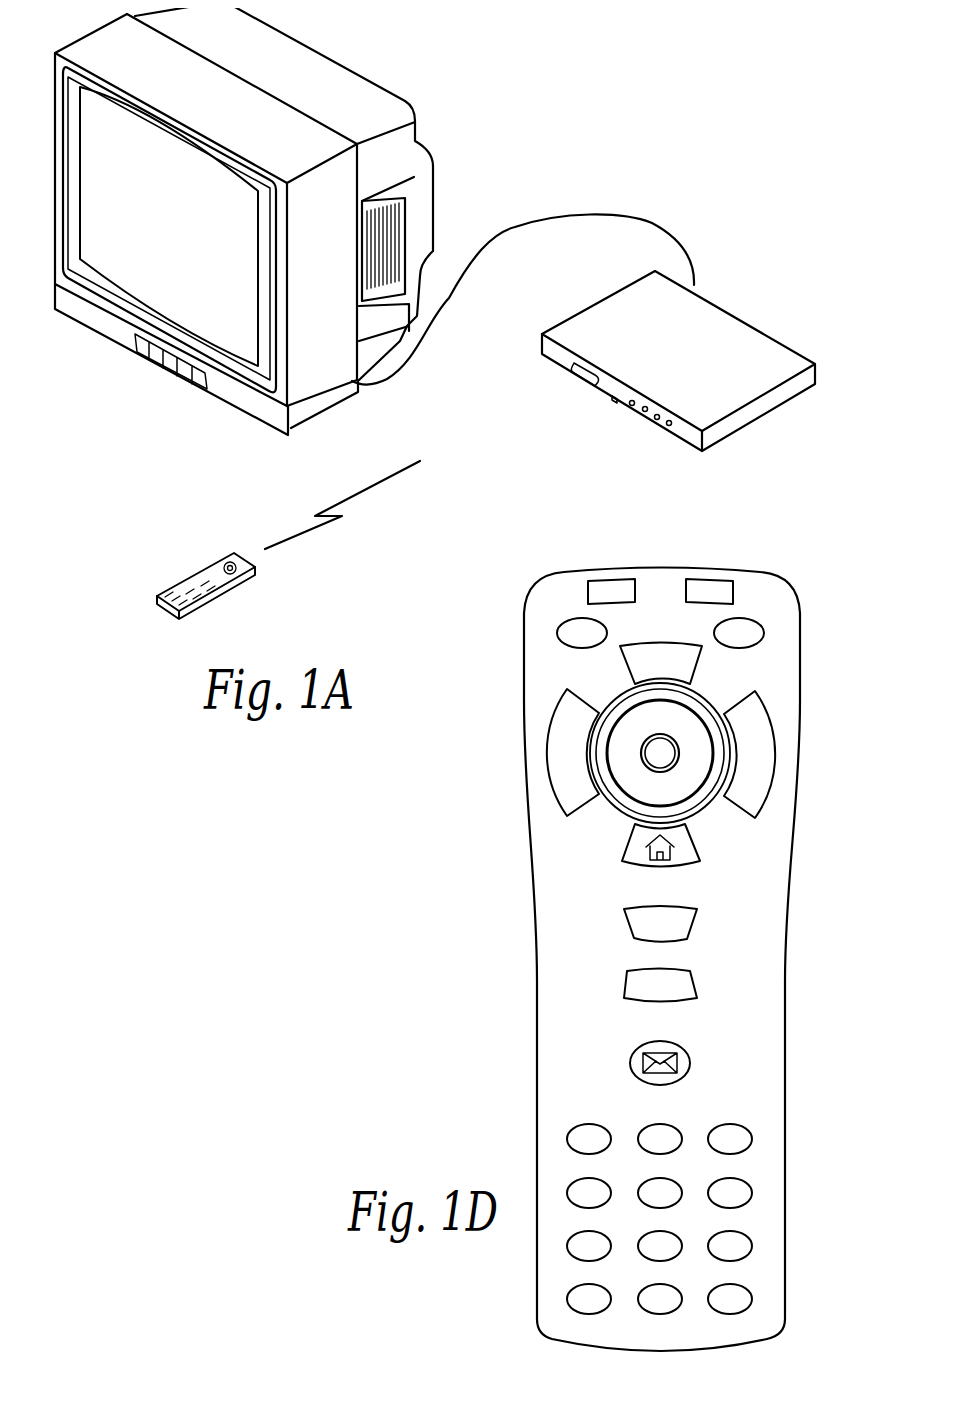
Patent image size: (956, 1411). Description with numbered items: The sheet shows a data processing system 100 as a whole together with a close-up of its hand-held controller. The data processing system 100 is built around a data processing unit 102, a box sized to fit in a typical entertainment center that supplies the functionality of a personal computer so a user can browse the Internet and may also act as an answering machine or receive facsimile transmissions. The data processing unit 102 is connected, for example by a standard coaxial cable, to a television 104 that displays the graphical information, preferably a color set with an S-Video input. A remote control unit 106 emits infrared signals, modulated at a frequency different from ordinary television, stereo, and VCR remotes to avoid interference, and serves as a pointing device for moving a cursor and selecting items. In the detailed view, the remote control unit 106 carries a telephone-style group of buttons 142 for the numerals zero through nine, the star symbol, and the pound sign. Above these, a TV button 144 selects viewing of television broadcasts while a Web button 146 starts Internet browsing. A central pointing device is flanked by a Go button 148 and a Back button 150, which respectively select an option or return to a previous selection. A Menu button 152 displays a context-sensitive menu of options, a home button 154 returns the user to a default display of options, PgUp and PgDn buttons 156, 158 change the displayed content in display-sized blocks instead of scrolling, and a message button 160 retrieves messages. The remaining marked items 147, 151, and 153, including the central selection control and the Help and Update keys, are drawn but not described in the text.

In FIG. 1A, the data processing system 100 is at (542, 477).
In FIG. 1A, the data processing unit 102 is at (753, 320).
In FIG. 1A, the television 104 is at (381, 90).
In FIG. 1A, the remote control unit 106 is at (178, 578).
In FIG. 1D, the remote control unit 106 is at (783, 1092).
In FIG. 1D, the buttons 142 is at (790, 1115).
In FIG. 1D, the TV button 144 is at (608, 579).
In FIG. 1D, the Web button 146 is at (708, 580).
In FIG. 1D, the select button 147 is at (667, 753).
In FIG. 1D, the Go button 148 is at (743, 817).
In FIG. 1D, the Back button 150 is at (573, 817).
In FIG. 1D, the Help button 151 is at (556, 630).
In FIG. 1D, the Menu button 152 is at (667, 645).
In FIG. 1D, the Update button 153 is at (763, 636).
In FIG. 1D, the home button 154 is at (687, 865).
In FIG. 1D, the PgUp button 156 is at (695, 922).
In FIG. 1D, the PgDn button 158 is at (678, 998).
In FIG. 1D, the message button 160 is at (688, 1063).